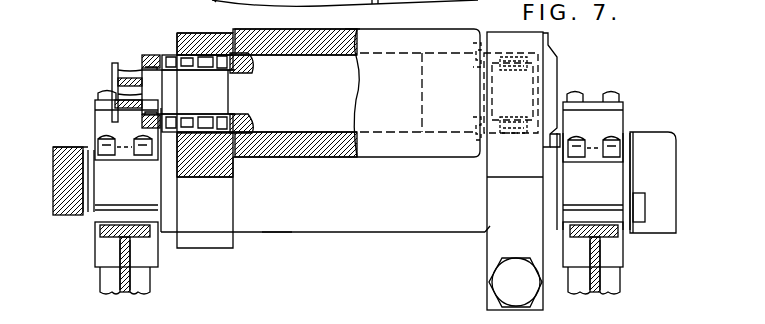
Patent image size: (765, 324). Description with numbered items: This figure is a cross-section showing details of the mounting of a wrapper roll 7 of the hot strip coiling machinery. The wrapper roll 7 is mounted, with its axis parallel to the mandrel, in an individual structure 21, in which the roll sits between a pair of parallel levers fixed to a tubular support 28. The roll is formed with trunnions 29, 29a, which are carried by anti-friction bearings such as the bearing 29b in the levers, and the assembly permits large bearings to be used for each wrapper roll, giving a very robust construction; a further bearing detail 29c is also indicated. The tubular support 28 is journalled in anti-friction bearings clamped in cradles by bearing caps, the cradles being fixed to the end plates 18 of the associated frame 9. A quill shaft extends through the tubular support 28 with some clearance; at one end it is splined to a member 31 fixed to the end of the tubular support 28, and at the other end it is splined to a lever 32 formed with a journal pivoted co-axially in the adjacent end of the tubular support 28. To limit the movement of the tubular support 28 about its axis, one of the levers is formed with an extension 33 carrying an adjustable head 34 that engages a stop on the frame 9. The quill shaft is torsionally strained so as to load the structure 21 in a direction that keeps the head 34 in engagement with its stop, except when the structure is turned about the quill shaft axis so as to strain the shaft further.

The wrapper roll 7 is at (352, 31).
The frame 9 is at (192, 0).
The end plate 18 is at (130, 283).
The individual structure 21 is at (277, 238).
The tubular support 28 is at (361, 222).
The trunnion 29 is at (218, 101).
The trunnion 29a is at (527, 97).
The anti-friction bearing 29b is at (197, 70).
The bearing outer race 29c is at (527, 58).
The member 31 is at (657, 227).
The lever 32 is at (68, 205).
The extension 33 is at (497, 246).
The adjustable head 34 is at (525, 291).